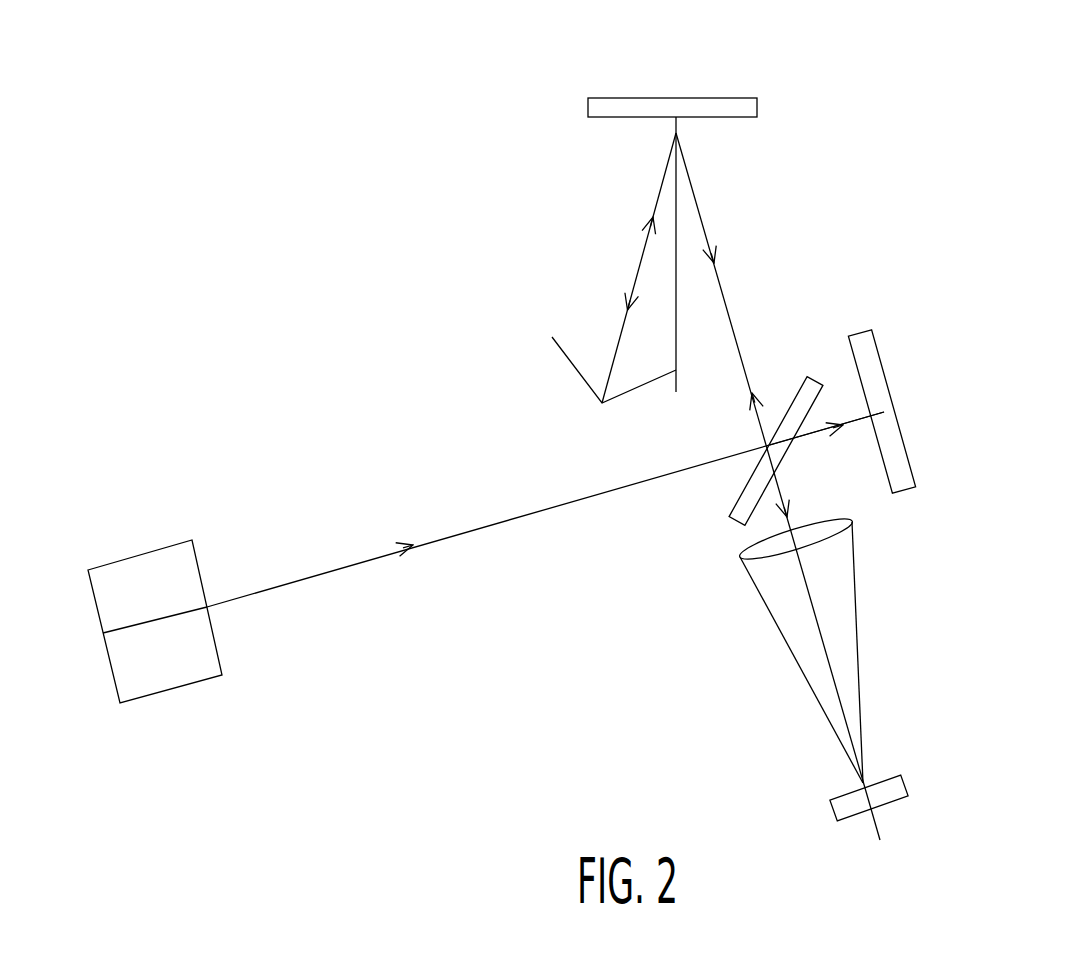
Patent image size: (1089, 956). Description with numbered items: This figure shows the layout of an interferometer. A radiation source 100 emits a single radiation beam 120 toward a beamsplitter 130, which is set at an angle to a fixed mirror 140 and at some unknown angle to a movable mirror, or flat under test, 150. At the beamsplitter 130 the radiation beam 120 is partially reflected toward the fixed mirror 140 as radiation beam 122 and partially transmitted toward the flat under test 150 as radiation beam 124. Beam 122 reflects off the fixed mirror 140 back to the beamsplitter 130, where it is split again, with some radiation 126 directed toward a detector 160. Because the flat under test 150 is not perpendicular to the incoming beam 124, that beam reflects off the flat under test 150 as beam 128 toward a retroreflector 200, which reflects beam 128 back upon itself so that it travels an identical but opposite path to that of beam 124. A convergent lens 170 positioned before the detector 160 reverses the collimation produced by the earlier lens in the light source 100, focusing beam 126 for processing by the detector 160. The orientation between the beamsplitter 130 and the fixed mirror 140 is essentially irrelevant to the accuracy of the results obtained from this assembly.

The radiation source 100 is at (130, 557).
The radiation beam 120 is at (545, 509).
The radiation beam 122 is at (815, 433).
The radiation beam 124 is at (723, 290).
The radiation 126 is at (750, 533).
The beam 128 is at (640, 262).
The beamsplitter 130 is at (806, 370).
The fixed mirror 140 is at (871, 410).
The movable mirror, or flat under test 150 is at (757, 98).
The detector 160 is at (873, 789).
The convergent lens 170 is at (856, 523).
The retroreflector 200 is at (550, 340).